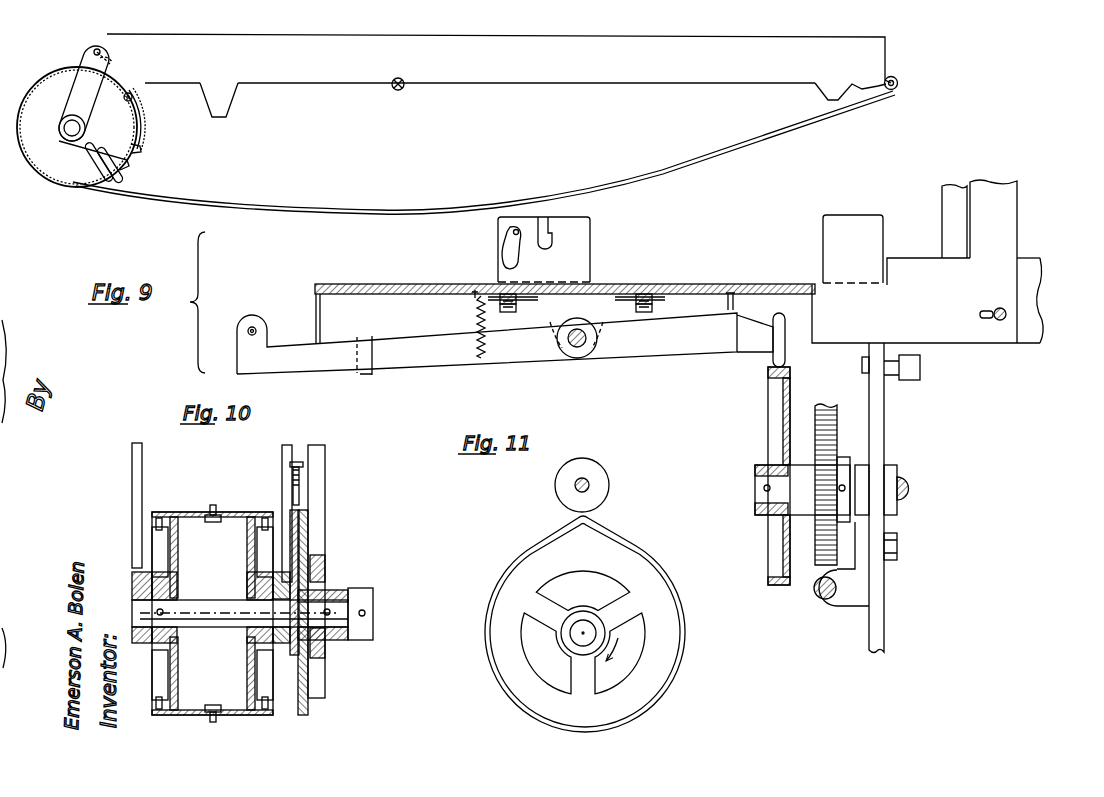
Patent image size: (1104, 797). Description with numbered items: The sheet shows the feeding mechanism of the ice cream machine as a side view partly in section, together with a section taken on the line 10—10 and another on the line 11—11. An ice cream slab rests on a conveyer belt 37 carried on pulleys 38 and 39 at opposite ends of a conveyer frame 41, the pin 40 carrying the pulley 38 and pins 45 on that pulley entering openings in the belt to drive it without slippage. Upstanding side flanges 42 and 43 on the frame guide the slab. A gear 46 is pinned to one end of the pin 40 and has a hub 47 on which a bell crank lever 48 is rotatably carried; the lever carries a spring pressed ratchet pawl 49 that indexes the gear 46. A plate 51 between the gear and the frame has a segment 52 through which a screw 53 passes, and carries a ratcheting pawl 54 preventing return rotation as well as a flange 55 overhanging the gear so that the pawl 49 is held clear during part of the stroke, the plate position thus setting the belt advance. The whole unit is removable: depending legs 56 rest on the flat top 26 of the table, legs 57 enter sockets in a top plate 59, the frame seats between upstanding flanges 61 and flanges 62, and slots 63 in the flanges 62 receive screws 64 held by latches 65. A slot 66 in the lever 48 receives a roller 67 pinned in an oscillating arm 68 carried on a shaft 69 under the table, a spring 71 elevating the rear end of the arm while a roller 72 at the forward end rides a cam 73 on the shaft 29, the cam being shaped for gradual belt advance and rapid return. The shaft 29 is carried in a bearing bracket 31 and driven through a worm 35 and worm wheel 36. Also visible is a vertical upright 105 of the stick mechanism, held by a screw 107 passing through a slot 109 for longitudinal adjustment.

In FIG. 9, the section line 10— 10 is at (35, 57).
In FIG. 9, the section line 11— 11 is at (783, 302).
In FIG. 9, the flat top 26 is at (1033, 313).
In FIG. 11, the shaft 29 is at (583, 625).
In FIG. 9, the bearing bracket 31 is at (877, 625).
In FIG. 9, the worm 35 is at (825, 603).
In FIG. 9, the worm wheel 36 is at (826, 401).
In FIG. 9, the conveyer belt 37 is at (383, 204).
In FIG. 10, the conveyer belt 37 is at (238, 509).
In FIG. 10, the pulley 38 is at (152, 590).
In FIG. 9, the pulley 39 is at (898, 79).
In FIG. 10, the pin 40 is at (197, 608).
In FIG. 9, the conveyer frame 41 is at (500, 84).
In FIG. 10, the side flange 42 is at (282, 452).
In FIG. 10, the side flange 43 is at (132, 458).
In FIG. 10, the pins 45 is at (213, 505).
In FIG. 10, the gear 46 is at (307, 542).
In FIG. 10, the hub 47 is at (337, 595).
In FIG. 9, the bell crank lever 48 is at (80, 80).
In FIG. 10, the bell crank lever 48 is at (323, 560).
In FIG. 9, the ratchet pawl 49 is at (115, 70).
In FIG. 10, the ratchet pawl 49 is at (302, 483).
In FIG. 10, the plate 51 is at (302, 527).
In FIG. 9, the segment 52 is at (145, 114).
In FIG. 9, the screw 53 is at (131, 93).
In FIG. 9, the ratcheting pawl 54 is at (137, 150).
In FIG. 10, the flange 55 is at (310, 510).
In FIG. 9, the depending legs 56 is at (227, 108).
In FIG. 9, the depending legs 57 is at (832, 90).
In FIG. 9, the top plate 59 is at (1030, 268).
In FIG. 9, the upstanding flanges 61 is at (847, 225).
In FIG. 9, the flanges 62 is at (580, 243).
In FIG. 9, the slot 63 is at (547, 233).
In FIG. 9, the screw 64 is at (401, 91).
In FIG. 9, the latch 65 is at (507, 247).
In FIG. 9, the slot 66 is at (102, 177).
In FIG. 9, the roller 67 is at (252, 317).
In FIG. 9, the oscillating arm 68 is at (572, 341).
In FIG. 9, the shaft 69 is at (580, 357).
In FIG. 9, the spring 71 is at (477, 320).
In FIG. 9, the roller 72 is at (787, 335).
In FIG. 11, the roller 72 is at (593, 474).
In FIG. 9, the cam 73 is at (772, 393).
In FIG. 11, the cam 73 is at (650, 560).
In FIG. 9, the vertical upright 105 is at (926, 261).
In FIG. 9, the screw 107 is at (1003, 320).
In FIG. 9, the slot 109 is at (983, 322).